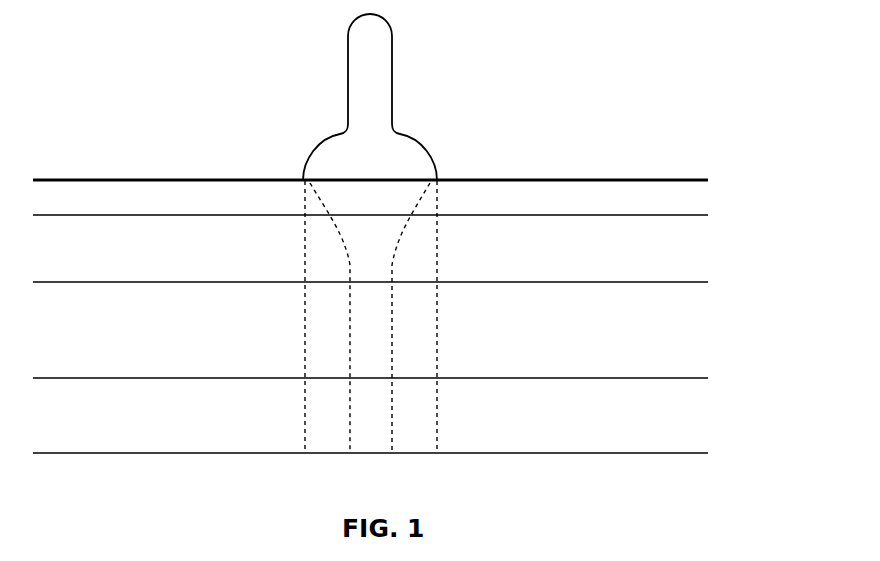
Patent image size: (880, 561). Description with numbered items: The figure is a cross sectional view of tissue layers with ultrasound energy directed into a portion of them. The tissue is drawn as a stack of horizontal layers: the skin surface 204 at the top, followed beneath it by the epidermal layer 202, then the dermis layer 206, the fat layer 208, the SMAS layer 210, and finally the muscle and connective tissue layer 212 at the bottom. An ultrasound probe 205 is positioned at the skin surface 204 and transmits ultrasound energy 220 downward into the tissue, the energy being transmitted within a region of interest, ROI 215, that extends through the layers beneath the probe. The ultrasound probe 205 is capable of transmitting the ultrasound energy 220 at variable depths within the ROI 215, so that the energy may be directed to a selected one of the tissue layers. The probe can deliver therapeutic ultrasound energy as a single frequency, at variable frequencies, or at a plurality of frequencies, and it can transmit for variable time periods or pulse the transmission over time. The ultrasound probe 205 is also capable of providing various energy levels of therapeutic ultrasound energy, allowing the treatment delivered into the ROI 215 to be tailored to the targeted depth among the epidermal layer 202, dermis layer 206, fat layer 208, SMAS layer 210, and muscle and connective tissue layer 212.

The epidermal layer 202 is at (692, 196).
The skin surface 204 is at (690, 160).
The ultrasound probe 205 is at (426, 98).
The dermis layer 206 is at (692, 248).
The fat layer 208 is at (692, 328).
The SMAS layer 210 is at (692, 414).
The muscle and connective tissue layer 212 is at (692, 486).
The ROI 215 is at (302, 325).
The ultrasound energy 220 is at (348, 395).